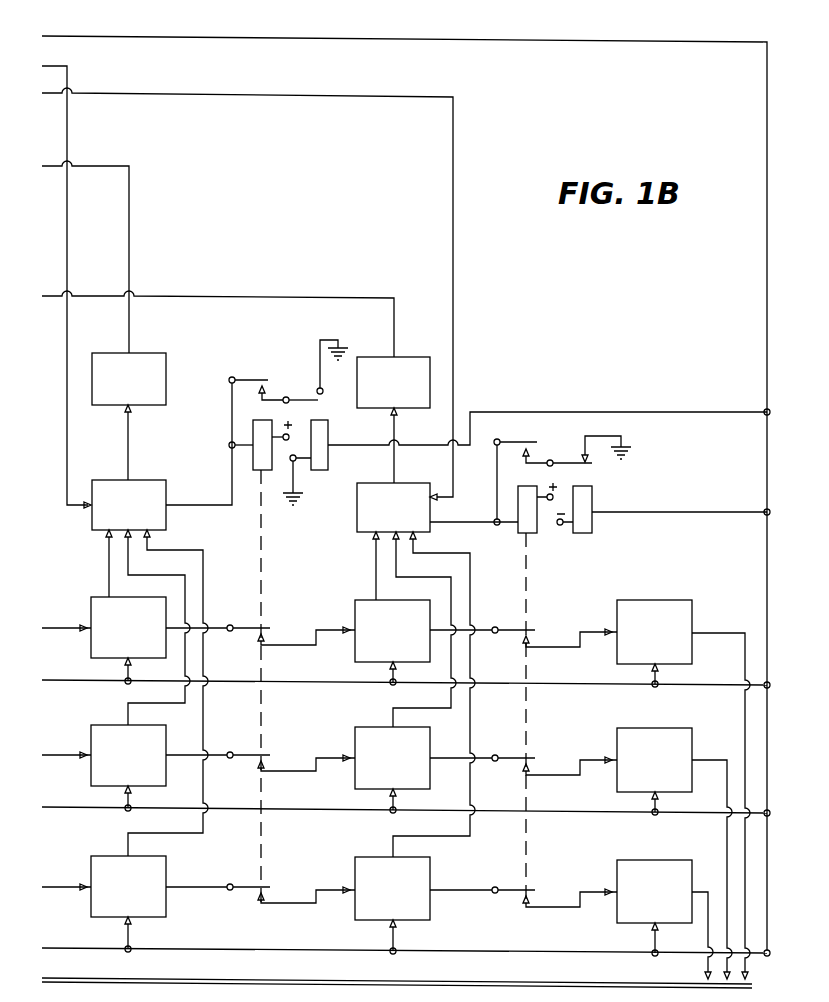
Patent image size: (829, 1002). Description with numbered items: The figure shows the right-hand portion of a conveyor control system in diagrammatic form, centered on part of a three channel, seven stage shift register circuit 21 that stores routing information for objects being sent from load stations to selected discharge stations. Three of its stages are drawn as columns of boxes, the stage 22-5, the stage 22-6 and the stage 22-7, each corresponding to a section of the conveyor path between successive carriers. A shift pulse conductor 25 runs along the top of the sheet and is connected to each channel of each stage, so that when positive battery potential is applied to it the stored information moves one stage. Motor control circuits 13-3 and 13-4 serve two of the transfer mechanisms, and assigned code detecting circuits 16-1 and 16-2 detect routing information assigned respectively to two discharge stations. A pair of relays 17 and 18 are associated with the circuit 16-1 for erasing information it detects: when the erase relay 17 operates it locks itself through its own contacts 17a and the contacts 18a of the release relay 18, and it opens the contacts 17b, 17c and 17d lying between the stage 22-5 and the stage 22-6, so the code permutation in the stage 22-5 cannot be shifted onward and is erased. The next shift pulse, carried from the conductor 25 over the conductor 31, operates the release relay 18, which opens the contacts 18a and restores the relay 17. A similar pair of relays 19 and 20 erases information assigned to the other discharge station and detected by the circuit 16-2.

The shift pulse conductor 25 is at (391, 40).
The conductor 31 is at (719, 412).
The motor control circuit 13-3 is at (126, 353).
The motor control circuit 13-4 is at (389, 357).
The assigned code detecting circuit 16-1 is at (121, 480).
The assigned code detecting circuit 16-2 is at (356, 497).
The erase relay 17 is at (252, 463).
The contacts of relay 17 17a is at (275, 393).
The contacts of relay 17 17b is at (265, 637).
The contacts of relay 17 17c is at (265, 764).
The contacts of relay 17 17d is at (265, 896).
The release relay 18 is at (329, 452).
The contacts of relay 18 18a is at (326, 393).
The relay 19 is at (517, 532).
The relay 20 is at (596, 518).
The shift register circuit 21 is at (691, 567).
The shift register stage 22-5 is at (100, 597).
The shift register stage 22-6 is at (365, 600).
The shift register stage 22-7 is at (655, 600).